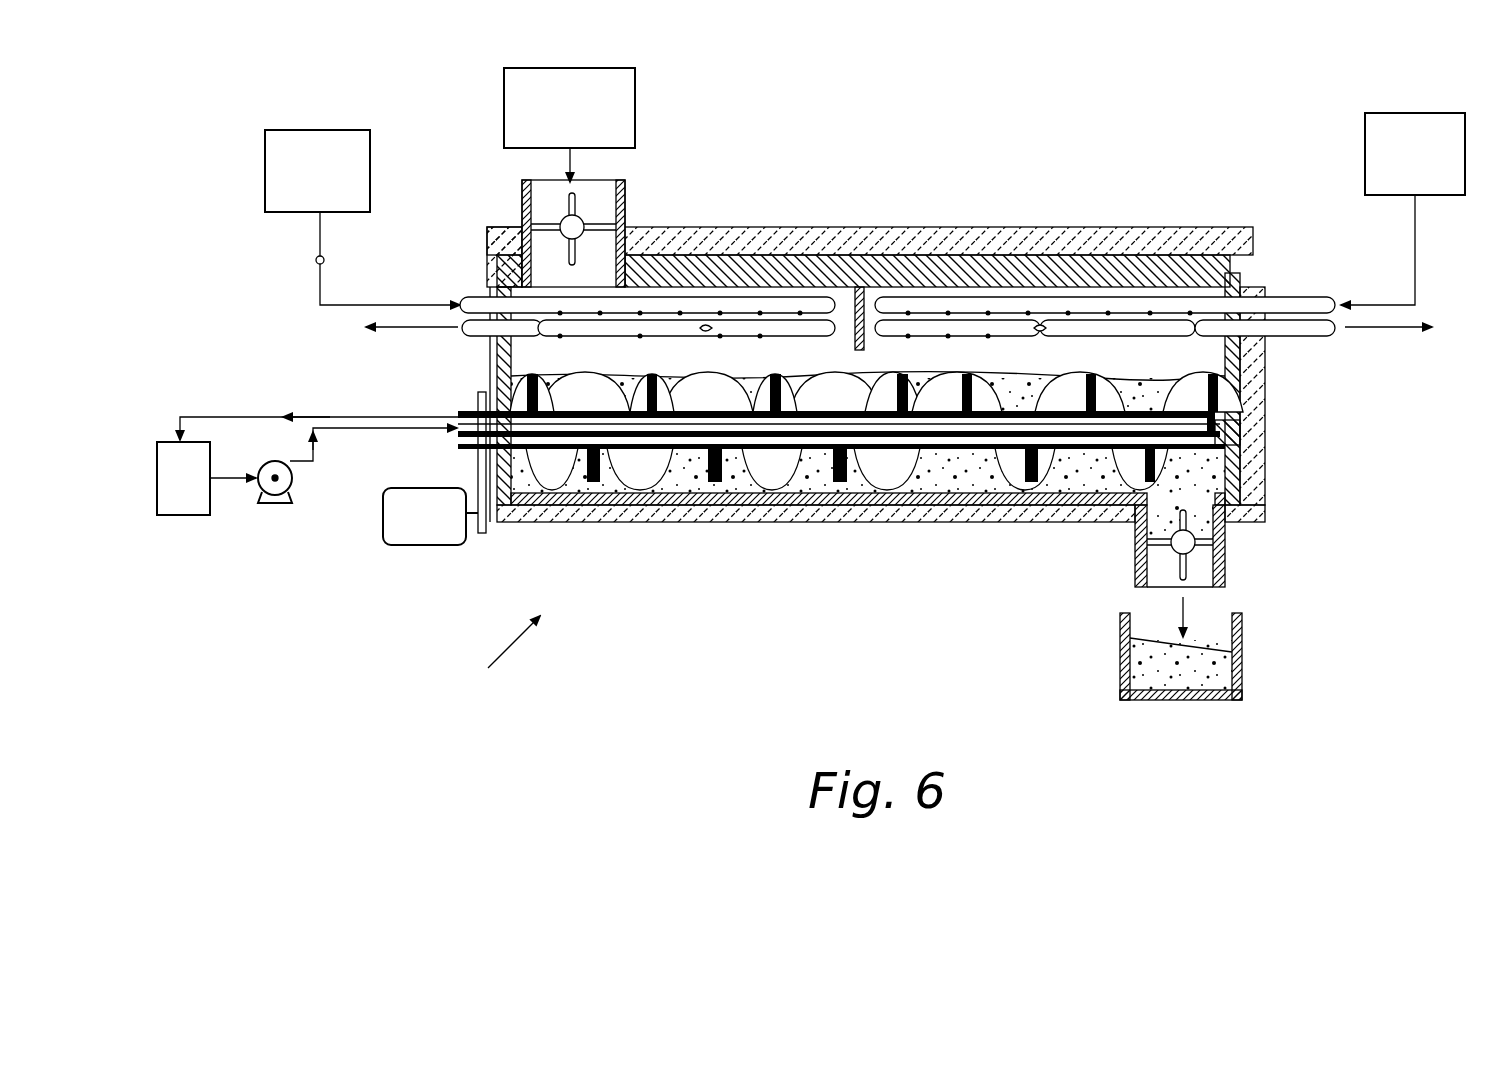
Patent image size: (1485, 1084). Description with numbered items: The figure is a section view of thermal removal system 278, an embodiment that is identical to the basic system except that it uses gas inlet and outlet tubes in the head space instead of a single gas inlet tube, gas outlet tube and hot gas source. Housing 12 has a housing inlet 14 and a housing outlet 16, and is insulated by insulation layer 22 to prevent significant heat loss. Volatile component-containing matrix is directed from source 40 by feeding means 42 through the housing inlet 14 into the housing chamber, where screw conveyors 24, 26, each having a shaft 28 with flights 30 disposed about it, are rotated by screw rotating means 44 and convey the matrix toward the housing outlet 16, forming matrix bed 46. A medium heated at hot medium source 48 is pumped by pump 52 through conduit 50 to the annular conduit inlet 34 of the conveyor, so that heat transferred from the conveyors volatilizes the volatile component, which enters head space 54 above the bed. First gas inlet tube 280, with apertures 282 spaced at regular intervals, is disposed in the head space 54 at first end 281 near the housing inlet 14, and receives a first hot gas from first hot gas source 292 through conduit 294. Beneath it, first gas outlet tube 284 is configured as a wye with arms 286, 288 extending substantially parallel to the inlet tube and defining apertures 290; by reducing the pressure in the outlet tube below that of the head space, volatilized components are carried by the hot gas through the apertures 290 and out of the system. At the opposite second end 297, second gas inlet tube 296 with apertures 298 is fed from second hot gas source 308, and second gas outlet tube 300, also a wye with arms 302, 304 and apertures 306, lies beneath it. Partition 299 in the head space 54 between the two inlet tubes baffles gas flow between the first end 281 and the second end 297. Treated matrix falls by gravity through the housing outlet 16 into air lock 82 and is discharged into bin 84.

The housing 12 is at (831, 516).
The housing inlet 14 is at (520, 237).
The housing outlet 16 is at (1200, 507).
The insulation layer 22 is at (774, 524).
The screw conveyor 24 is at (685, 480).
The screw conveyor 26 is at (962, 456).
The shaft 28 is at (1040, 470).
The flights 30 is at (472, 413).
The conduit inlet 34 is at (492, 400).
The source 40 is at (553, 114).
The feeding means 42 is at (583, 225).
The screw rotating means 44 is at (408, 531).
The matrix bed 46 is at (680, 490).
The hot medium source 48 is at (185, 515).
The conduit 50 is at (362, 430).
The pump 52 is at (280, 503).
The head space 54 is at (1127, 357).
The air lock 82 is at (1210, 553).
The bin 84 is at (1243, 680).
The thermal removal system 278 is at (489, 656).
The first gas inlet tube 280 is at (742, 305).
The first end 281 is at (648, 292).
The apertures 282 is at (796, 306).
The first gas outlet tube 284 is at (523, 333).
The arm 286 is at (645, 333).
The arm 288 is at (737, 332).
The apertures 290 is at (820, 325).
The first hot gas source 292 is at (340, 180).
The conduit 294 is at (316, 260).
The second gas inlet tube 296 is at (946, 298).
The second end 297 is at (1090, 293).
The apertures 298 is at (1033, 310).
The partition 299 is at (940, 292).
The second gas outlet tube 300 is at (1207, 332).
The arm 302 is at (1087, 333).
The arm 304 is at (1017, 333).
The apertures 306 is at (950, 338).
The second hot gas source 308 is at (1391, 166).